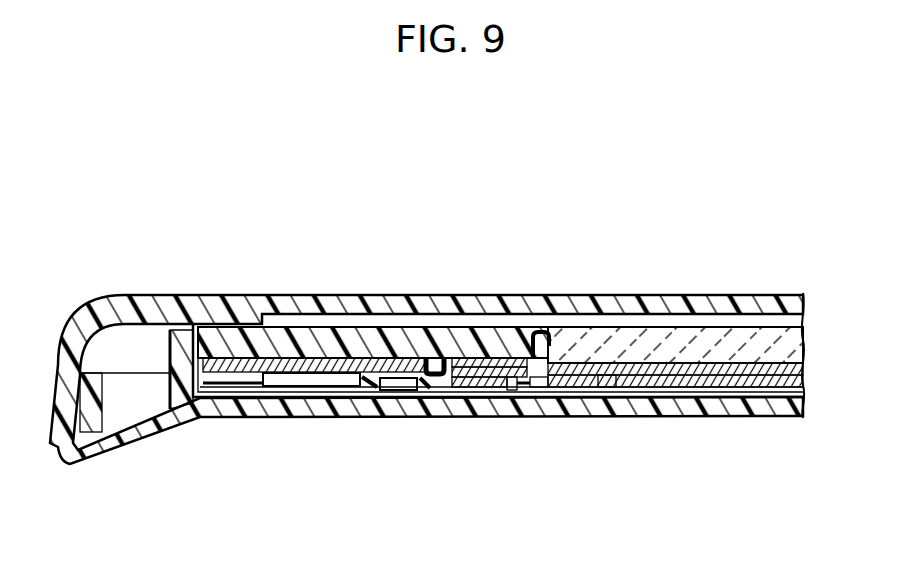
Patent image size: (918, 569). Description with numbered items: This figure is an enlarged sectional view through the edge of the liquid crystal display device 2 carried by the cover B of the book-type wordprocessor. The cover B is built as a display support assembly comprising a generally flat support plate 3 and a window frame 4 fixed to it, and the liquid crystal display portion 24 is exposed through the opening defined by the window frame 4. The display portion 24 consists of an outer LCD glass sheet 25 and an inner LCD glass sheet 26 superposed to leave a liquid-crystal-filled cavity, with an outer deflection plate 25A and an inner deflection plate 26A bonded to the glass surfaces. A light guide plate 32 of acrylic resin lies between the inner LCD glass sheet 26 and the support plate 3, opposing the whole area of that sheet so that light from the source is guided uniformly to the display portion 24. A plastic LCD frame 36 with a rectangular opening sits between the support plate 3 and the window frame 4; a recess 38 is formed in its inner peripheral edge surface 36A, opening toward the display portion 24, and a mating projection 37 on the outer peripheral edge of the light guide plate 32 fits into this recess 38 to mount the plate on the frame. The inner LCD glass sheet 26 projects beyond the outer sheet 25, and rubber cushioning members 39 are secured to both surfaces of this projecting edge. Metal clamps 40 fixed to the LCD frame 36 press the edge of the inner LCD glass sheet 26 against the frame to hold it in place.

The liquid crystal display device 2 is at (765, 412).
The support plate 3 is at (265, 295).
The window frame 4 is at (155, 427).
The liquid crystal display portion 24 is at (788, 400).
The outer LCD glass sheet 25 is at (667, 387).
The outer deflection plate 25A is at (607, 382).
The inner LCD glass sheet 26 is at (727, 390).
The inner deflection plate 26A is at (762, 363).
The light guide plate 32 is at (717, 327).
The LCD frame 36 is at (404, 338).
The inner peripheral edge surface 36A is at (572, 327).
The projection 37 is at (549, 385).
The recess 38 is at (528, 390).
The rubber cushioning members 39 is at (485, 355).
The clamps 40 is at (375, 387).
The cover B is at (184, 278).